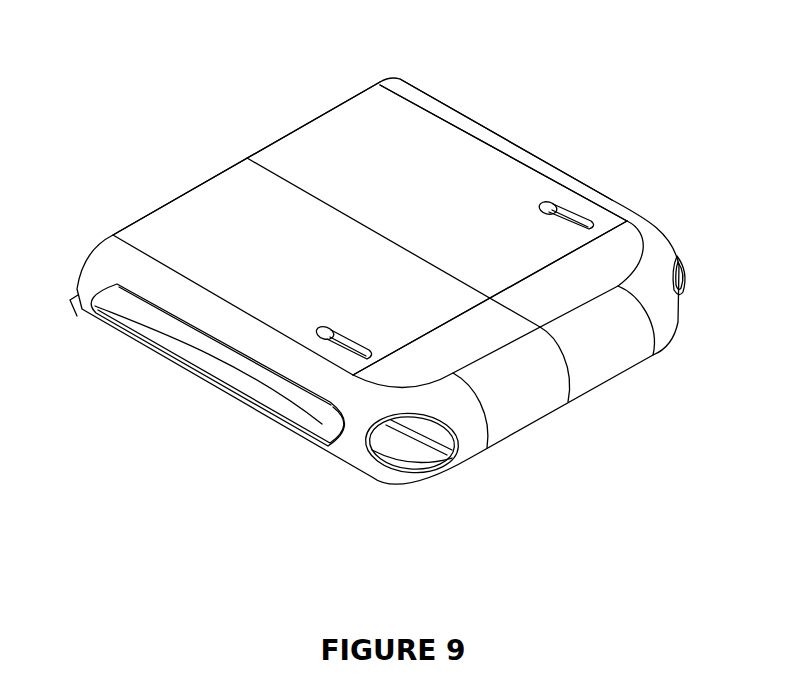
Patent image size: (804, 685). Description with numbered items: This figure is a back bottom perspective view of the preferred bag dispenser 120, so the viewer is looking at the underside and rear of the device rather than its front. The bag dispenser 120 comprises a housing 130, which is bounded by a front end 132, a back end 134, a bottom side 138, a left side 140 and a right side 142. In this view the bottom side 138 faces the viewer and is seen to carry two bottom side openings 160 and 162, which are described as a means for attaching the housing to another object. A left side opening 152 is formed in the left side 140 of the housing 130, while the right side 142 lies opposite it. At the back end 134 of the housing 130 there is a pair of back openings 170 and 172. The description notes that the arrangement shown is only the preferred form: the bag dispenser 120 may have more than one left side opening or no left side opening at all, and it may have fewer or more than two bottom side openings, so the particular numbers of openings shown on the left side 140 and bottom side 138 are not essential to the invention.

The bag dispenser 120 is at (118, 210).
The housing 130 is at (312, 122).
The front end 132 is at (208, 163).
The back end 134 is at (590, 407).
The bottom side 138 is at (416, 133).
The left side 140 is at (78, 317).
The right side 142 is at (492, 133).
The left side opening 152 is at (218, 365).
The bottom side opening 160 is at (325, 337).
The bottom side opening 162 is at (557, 208).
The back opening 170 is at (405, 449).
The back opening 172 is at (685, 281).